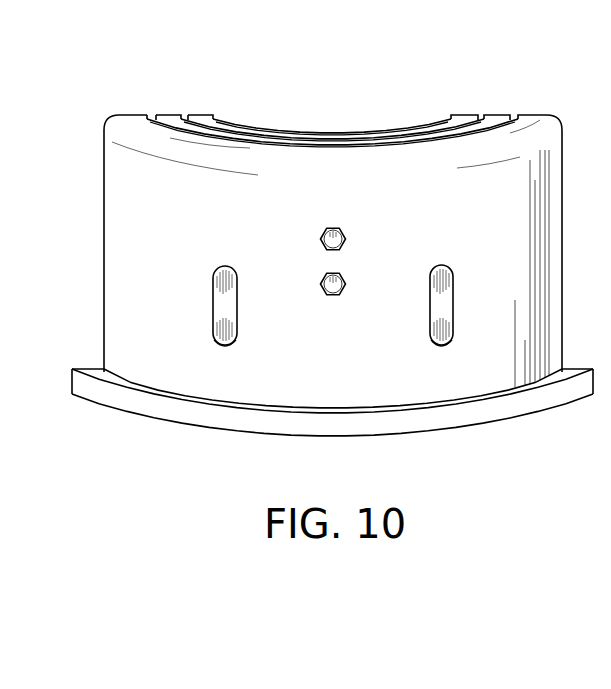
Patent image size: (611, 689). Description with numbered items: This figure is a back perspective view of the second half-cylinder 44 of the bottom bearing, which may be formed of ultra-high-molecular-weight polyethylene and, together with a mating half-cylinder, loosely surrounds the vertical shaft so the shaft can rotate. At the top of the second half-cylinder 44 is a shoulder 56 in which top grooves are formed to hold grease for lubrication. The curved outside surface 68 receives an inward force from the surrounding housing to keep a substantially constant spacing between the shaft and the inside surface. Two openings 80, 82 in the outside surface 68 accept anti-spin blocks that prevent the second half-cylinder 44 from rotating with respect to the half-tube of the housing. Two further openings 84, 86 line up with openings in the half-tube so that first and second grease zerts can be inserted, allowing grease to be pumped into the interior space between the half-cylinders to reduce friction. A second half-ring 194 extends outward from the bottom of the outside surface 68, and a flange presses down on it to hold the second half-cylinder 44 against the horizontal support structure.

The second half-cylinder 44 is at (126, 208).
The shoulder 56 is at (133, 123).
The outside surface 68 is at (502, 192).
The opening 80 is at (220, 295).
The opening 82 is at (440, 305).
The first opening 84 is at (345, 243).
The second opening 86 is at (344, 292).
The second half-ring 194 is at (112, 406).